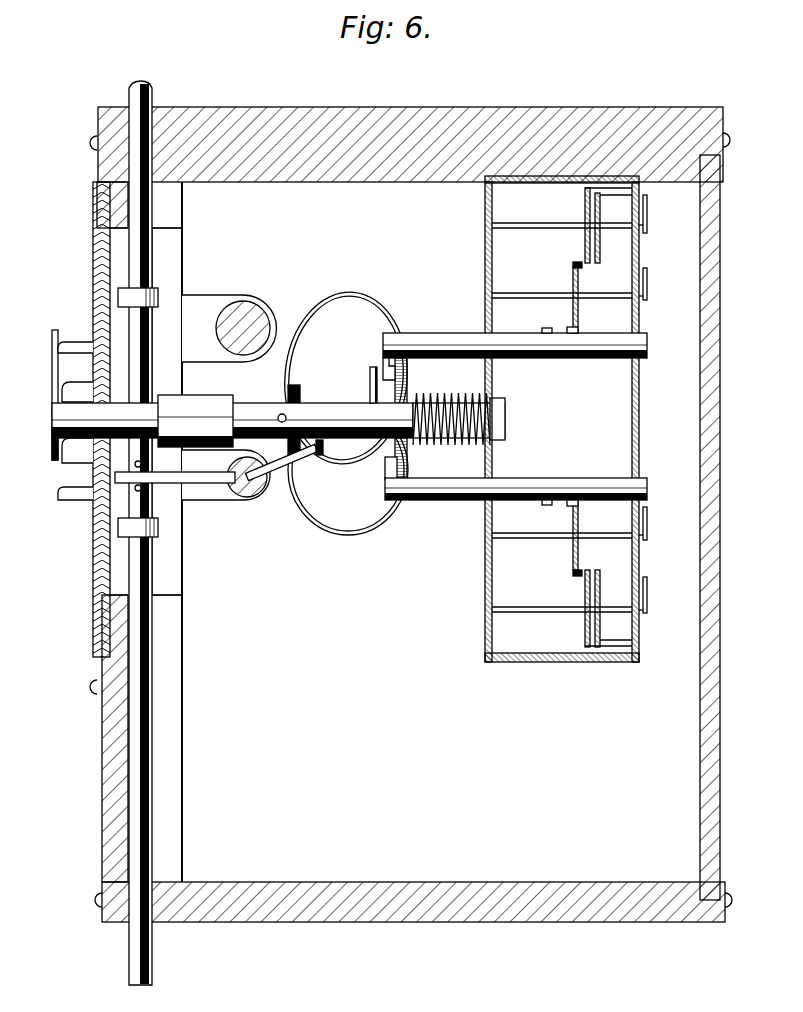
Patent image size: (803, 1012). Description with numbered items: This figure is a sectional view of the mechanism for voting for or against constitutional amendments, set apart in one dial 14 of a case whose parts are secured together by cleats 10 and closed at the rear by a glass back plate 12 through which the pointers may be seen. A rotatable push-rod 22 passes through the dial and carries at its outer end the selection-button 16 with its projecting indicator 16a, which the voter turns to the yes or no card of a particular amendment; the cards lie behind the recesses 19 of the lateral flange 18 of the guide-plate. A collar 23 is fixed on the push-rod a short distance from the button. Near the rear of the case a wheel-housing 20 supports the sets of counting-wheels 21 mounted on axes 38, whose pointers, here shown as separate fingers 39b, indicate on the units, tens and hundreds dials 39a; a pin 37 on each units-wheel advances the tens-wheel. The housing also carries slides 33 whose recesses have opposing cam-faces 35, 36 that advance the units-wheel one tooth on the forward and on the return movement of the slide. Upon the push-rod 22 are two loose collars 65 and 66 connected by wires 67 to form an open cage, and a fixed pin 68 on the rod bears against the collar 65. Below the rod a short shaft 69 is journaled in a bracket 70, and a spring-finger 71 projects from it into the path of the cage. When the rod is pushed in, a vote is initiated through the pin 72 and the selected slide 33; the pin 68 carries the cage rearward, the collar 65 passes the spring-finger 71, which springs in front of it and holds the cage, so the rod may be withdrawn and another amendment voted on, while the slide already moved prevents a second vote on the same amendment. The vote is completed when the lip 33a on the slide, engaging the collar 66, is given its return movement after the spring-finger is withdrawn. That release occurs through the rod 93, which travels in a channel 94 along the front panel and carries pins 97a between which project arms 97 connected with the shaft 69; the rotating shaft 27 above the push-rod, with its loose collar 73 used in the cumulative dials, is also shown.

The cleats 10 is at (722, 125).
The back plate of glass 12 is at (722, 557).
The dial 14 is at (93, 262).
The selection-button 16 is at (52, 432).
The projecting indicator 16a is at (52, 350).
The lateral flange 18 is at (80, 495).
The recesses 19 is at (58, 480).
The wheel-housing 20 is at (640, 318).
The counting-wheels 21 is at (608, 417).
The push-rod 22 is at (232, 420).
The collar 23 is at (205, 398).
The rotating shaft 27 is at (262, 305).
The slides 33 is at (572, 360).
The lip 33a is at (386, 366).
The cam-face 35 is at (546, 328).
The cam-face 36 is at (570, 327).
The pin 37 is at (580, 266).
The axes 38 is at (545, 228).
The dials 39a is at (647, 510).
The fingers 39b is at (647, 200).
The loose collar 65 is at (300, 396).
The loose collar 66 is at (403, 388).
The wires 67 is at (355, 294).
The fixed pin 68 is at (280, 414).
The short shaft 69 is at (251, 497).
The bracket 70 is at (220, 492).
The spring-finger 71 is at (305, 462).
The pin 72 is at (370, 386).
The loose collar 73 is at (388, 468).
The rod 93 is at (152, 90).
The channel 94 is at (167, 411).
The arms 97 is at (172, 483).
The pins 97a is at (141, 464).